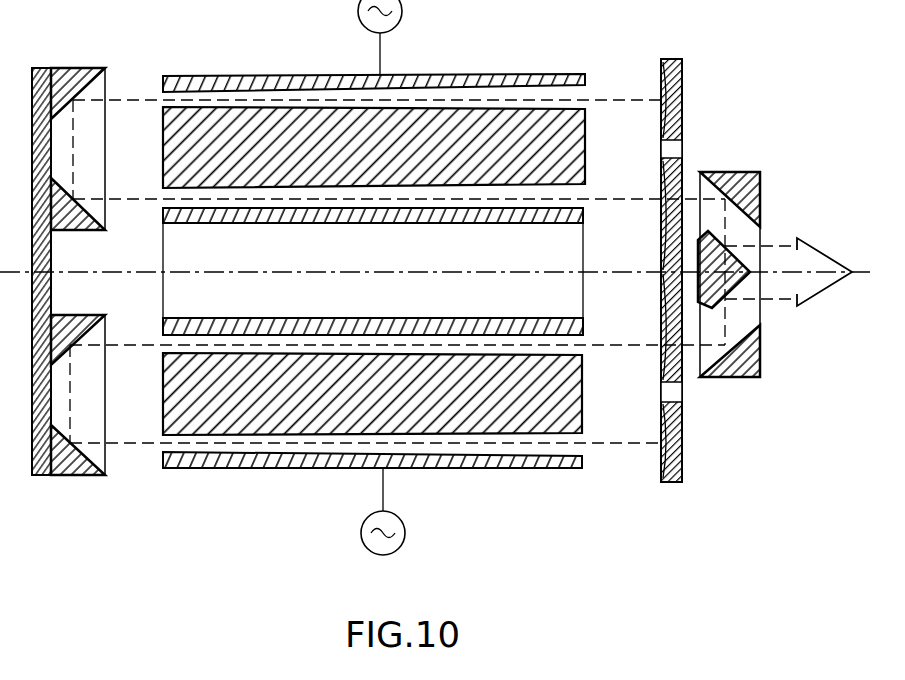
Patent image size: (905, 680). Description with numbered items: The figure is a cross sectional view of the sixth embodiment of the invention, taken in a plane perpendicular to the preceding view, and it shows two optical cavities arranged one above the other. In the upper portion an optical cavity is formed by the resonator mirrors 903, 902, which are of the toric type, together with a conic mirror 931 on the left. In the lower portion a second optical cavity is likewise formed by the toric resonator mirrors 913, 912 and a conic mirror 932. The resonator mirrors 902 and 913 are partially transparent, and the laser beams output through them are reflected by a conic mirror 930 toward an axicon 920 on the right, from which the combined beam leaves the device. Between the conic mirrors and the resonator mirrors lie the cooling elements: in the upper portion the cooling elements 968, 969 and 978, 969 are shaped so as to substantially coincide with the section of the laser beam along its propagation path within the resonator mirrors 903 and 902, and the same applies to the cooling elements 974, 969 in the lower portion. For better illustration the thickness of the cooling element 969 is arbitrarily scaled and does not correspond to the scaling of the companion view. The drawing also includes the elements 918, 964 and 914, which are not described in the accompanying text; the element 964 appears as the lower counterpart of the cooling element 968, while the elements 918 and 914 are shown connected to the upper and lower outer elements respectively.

The cooling element 968 is at (203, 76).
The upper RF oscillator 918 is at (380, 52).
The cooling element 969 is at (530, 125).
The resonator mirror 903 is at (660, 100).
The conic mirror 930 is at (740, 172).
The conic mirror 931 is at (73, 199).
The conic mirror 932 is at (70, 443).
The cooling element 978 is at (278, 223).
The cooling element 974 is at (355, 319).
The resonator mirror 902 is at (662, 215).
The resonator mirror 913 is at (662, 325).
The axicon 920 is at (740, 285).
The lower electrode strip 964 is at (200, 470).
The lower RF oscillator 914 is at (383, 490).
The resonator mirror 912 is at (660, 447).